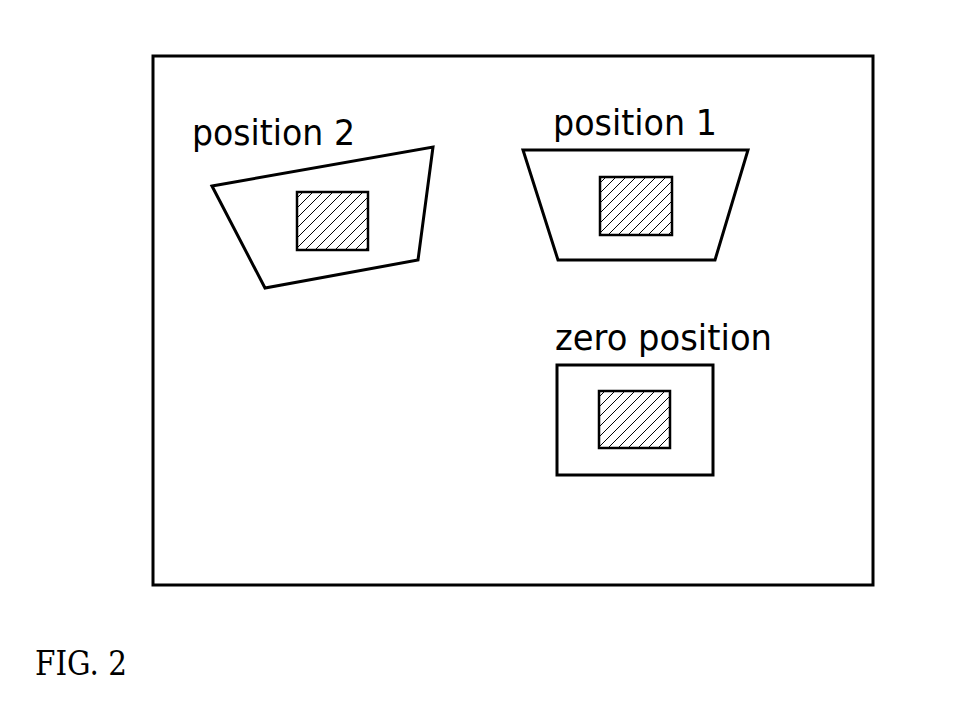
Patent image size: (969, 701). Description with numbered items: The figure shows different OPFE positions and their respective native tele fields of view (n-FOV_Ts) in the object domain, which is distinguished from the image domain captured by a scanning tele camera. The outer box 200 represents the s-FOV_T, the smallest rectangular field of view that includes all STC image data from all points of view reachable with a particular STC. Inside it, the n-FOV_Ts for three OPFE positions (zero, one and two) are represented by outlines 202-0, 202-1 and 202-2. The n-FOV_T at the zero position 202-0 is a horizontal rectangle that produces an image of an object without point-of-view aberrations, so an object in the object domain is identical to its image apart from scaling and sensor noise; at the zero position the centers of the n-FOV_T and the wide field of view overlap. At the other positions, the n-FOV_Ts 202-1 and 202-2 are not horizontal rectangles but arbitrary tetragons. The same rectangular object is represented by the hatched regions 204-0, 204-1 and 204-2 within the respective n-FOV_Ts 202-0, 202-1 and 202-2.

The box representing s-FOV_T 200 is at (153, 327).
The n-FOV_T at OPFE zero position 202-0 is at (713, 463).
The rectangular object in n-FOV_T 202-0 204-0 is at (670, 408).
The n-FOV_T at OPFE position 1 202-1 is at (720, 243).
The rectangular object in n-FOV_T 202-1 204-1 is at (672, 200).
The n-FOV_T at OPFE position 2 202-2 is at (285, 288).
The rectangular object in n-FOV_T 202-2 204-2 is at (362, 250).